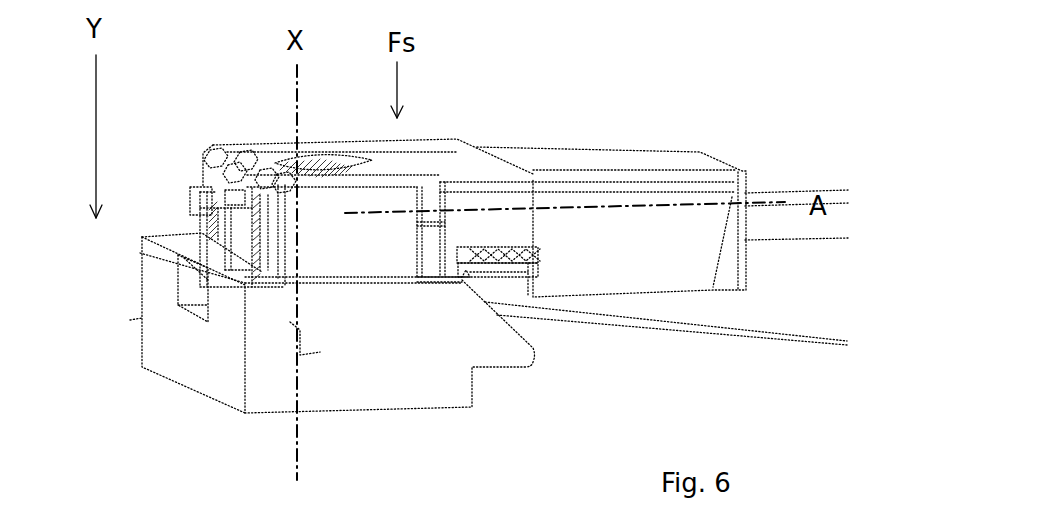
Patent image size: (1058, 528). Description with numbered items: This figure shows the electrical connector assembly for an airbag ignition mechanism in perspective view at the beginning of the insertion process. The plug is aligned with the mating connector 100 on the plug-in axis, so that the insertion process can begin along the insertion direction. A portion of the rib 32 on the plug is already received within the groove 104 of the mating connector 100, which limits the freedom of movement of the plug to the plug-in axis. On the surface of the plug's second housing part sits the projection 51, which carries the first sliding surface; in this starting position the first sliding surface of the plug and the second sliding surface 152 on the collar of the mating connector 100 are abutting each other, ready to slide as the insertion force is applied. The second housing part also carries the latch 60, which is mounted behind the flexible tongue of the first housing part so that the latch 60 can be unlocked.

The mating connector 100 is at (203, 372).
The latch 60 is at (210, 200).
The rib 32 is at (427, 257).
The groove 104 is at (432, 280).
The projection 51 is at (497, 283).
The second sliding surface 152 is at (502, 322).